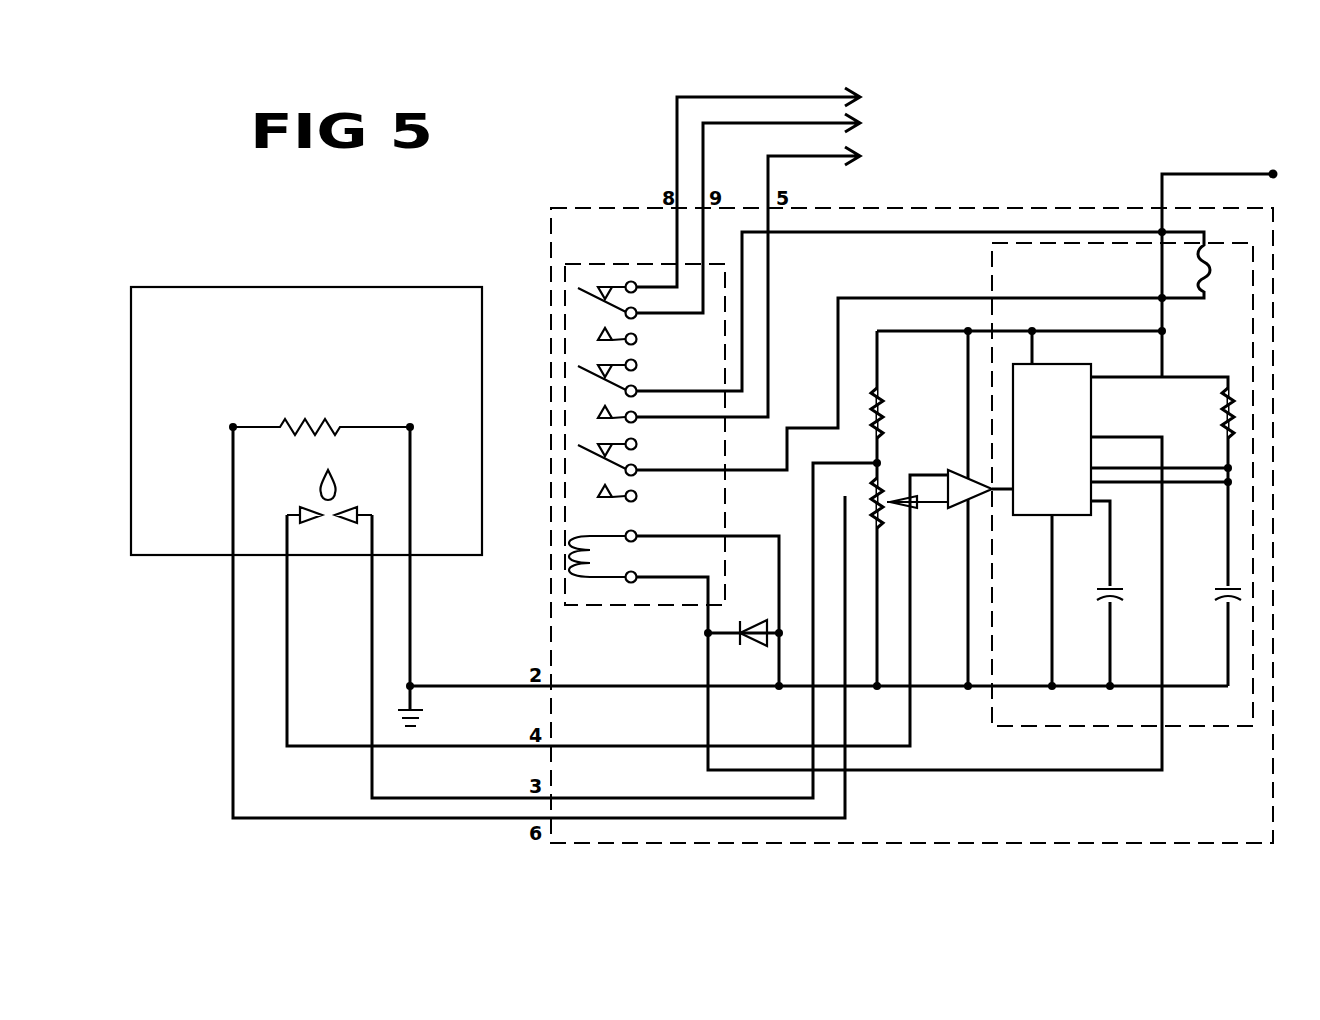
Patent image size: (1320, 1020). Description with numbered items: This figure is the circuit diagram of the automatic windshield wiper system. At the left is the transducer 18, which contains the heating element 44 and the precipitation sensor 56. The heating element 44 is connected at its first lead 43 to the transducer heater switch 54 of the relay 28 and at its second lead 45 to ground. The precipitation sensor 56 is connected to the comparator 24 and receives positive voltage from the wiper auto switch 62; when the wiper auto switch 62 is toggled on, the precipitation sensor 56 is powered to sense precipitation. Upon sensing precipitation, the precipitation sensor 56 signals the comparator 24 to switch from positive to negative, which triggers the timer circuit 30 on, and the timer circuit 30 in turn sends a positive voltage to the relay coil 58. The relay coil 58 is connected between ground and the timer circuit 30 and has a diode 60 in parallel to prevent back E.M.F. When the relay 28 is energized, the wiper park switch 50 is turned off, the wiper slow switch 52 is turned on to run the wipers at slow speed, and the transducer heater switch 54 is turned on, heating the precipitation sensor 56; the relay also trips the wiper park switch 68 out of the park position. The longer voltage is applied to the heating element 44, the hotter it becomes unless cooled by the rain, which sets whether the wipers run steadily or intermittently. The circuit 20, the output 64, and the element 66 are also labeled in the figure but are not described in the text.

The transducer 18 is at (253, 286).
The control circuit 20 is at (1195, 843).
The comparator 24 is at (948, 506).
The relay 28 is at (643, 263).
The timer circuit 30 is at (1092, 400).
The first lead 43 is at (233, 427).
The heating element 44 is at (262, 398).
The second lead 45 is at (410, 427).
The wiper park switch 50 is at (590, 290).
The wiper slow switch 52 is at (590, 369).
The transducer heater switch 54 is at (590, 448).
The precipitation sensor 56 is at (298, 492).
The relay coil 58 is at (600, 552).
The diode 60 is at (751, 621).
The wiper auto switch 62 is at (1280, 131).
The wiper slow tap output 64 is at (972, 168).
The potentiometer 66 is at (877, 519).
The wiper park switch 68 is at (975, 70).